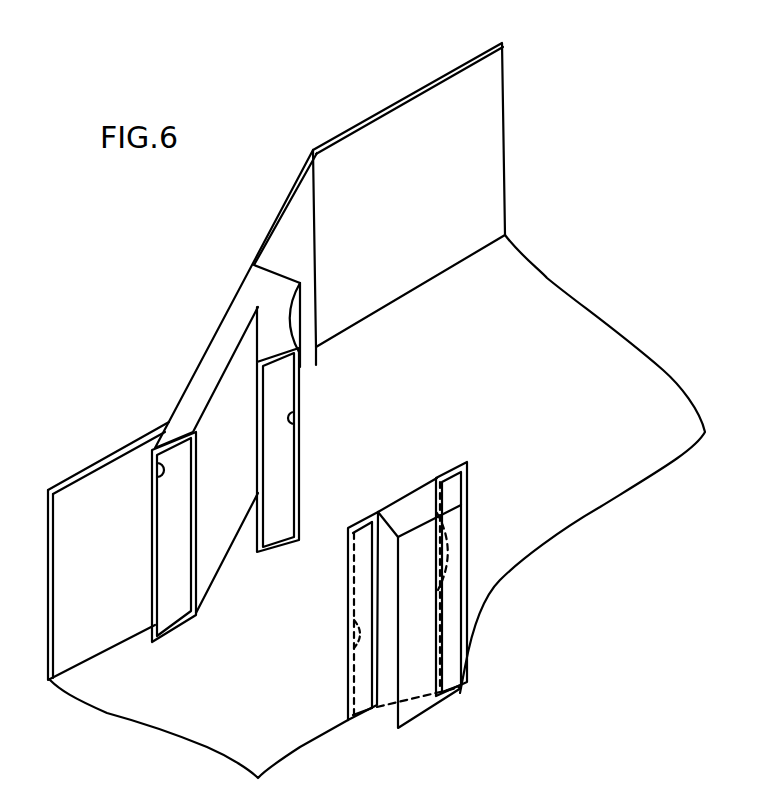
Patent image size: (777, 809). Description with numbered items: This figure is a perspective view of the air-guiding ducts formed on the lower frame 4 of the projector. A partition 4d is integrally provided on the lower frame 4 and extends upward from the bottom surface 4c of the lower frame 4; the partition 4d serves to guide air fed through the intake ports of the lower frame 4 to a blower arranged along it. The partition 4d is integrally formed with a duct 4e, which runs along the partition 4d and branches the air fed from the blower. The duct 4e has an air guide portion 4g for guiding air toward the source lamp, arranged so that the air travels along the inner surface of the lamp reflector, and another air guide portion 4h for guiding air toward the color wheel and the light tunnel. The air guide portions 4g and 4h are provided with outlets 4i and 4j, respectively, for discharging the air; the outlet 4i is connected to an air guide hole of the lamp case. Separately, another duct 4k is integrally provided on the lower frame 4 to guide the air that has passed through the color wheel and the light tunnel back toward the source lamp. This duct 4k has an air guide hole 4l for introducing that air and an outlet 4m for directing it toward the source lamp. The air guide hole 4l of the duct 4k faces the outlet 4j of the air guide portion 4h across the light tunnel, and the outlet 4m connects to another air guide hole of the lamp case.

The lower frame 4 is at (377, 506).
The bottom surface 4c is at (518, 305).
The partition 4d is at (467, 167).
The duct 4e is at (220, 508).
The air guide portion 4g is at (198, 385).
The air guide portion 4h is at (274, 345).
The outlet 4i is at (155, 450).
The outlet 4j is at (286, 418).
The duct 4k is at (421, 656).
The air guide hole 4l is at (430, 500).
The outlet 4m is at (347, 657).